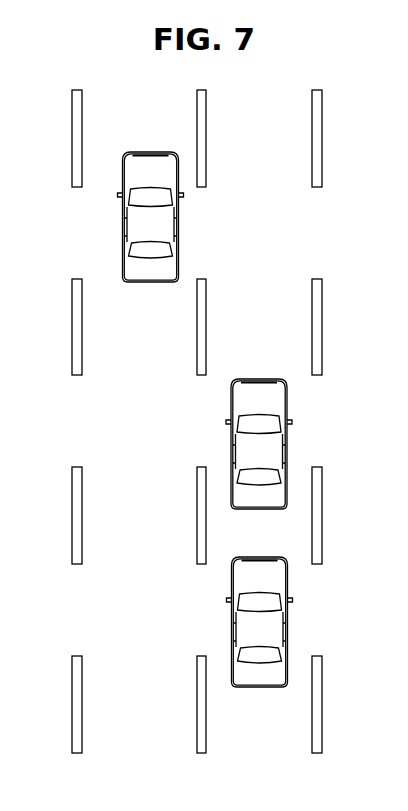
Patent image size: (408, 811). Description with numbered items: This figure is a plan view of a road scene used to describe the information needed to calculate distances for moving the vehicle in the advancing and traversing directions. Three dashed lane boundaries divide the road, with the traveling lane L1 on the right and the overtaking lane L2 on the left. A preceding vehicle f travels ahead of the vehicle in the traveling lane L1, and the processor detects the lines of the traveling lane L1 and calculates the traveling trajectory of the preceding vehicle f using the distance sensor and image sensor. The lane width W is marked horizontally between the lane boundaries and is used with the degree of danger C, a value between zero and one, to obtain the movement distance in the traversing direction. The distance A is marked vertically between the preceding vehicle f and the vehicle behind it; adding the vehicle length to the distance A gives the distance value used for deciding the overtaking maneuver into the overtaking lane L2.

The traveling lane L1 is at (277, 112).
The overtaking lane L2 is at (125, 112).
The lane width W is at (312, 327).
The distance A is at (160, 379).
The preceding vehicle f is at (273, 452).
The degree of danger C is at (268, 628).